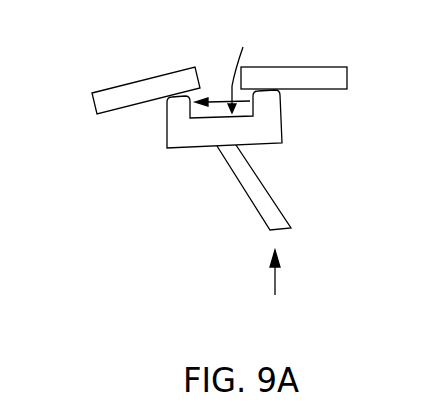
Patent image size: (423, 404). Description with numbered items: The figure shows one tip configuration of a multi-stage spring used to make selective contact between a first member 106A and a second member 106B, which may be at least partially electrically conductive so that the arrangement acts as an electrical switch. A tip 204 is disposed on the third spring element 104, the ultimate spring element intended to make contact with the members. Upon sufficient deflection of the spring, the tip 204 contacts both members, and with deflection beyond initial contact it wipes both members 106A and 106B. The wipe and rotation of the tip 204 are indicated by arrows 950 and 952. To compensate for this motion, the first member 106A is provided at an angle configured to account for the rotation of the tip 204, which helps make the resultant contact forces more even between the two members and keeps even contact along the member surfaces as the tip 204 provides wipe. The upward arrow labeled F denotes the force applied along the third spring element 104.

The first member 106A is at (117, 113).
The second member 106B is at (310, 89).
The tip 204 is at (165, 131).
The third spring element 104 is at (263, 185).
The arrow 950 is at (217, 101).
The arrow 952 is at (254, 75).
The applied force F is at (274, 286).